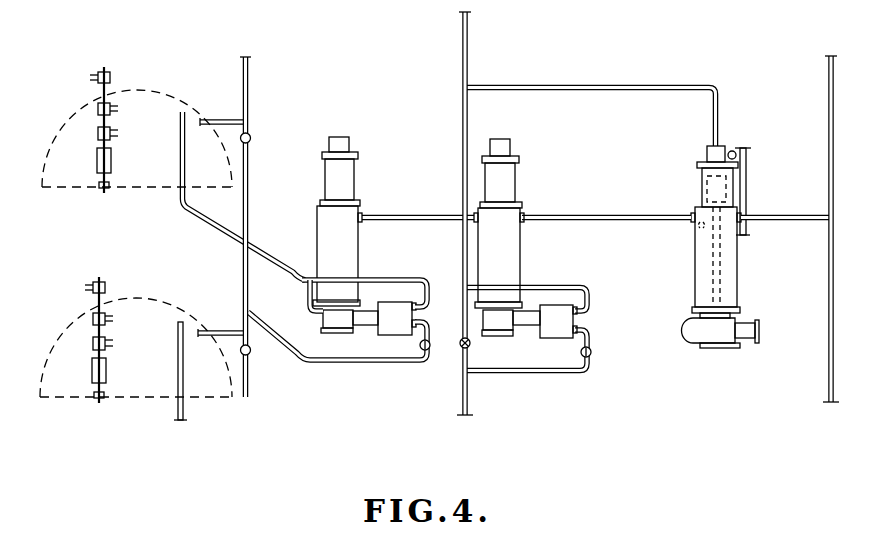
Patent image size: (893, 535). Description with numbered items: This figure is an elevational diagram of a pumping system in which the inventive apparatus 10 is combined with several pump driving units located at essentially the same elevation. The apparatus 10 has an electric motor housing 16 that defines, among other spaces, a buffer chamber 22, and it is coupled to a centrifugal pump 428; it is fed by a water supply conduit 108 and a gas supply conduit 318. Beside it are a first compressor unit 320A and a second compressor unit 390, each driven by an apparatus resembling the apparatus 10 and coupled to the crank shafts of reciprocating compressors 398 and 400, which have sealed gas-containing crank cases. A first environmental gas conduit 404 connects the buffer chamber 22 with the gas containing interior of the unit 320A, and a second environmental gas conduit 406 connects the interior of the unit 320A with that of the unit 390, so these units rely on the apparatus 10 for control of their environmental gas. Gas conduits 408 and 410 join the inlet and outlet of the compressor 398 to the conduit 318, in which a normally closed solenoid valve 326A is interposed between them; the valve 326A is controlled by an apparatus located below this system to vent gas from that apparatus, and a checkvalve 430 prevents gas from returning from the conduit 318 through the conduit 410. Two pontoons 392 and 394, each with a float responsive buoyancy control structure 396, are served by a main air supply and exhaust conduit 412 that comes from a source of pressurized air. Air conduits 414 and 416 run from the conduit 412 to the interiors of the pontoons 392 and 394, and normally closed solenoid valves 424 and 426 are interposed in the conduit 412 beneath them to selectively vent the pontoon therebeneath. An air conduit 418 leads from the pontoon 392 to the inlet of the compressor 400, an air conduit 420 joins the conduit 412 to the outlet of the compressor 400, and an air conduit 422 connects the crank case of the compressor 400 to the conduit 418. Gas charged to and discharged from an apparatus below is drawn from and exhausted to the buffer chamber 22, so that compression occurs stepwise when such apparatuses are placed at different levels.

The apparatus 10 is at (733, 139).
The electric motor housing 16 is at (702, 184).
The buffer chamber 22 is at (737, 273).
The water supply conduit 108 is at (829, 136).
The gas supply conduit 318 is at (470, 58).
The first compressor unit 320A is at (517, 185).
The normally closed solenoid valve 326A is at (470, 346).
The second compressor unit 390 is at (360, 184).
The pontoon 392 is at (70, 118).
The pontoon 394 is at (78, 399).
The float responsive buoyancy control structure 396 is at (112, 157).
The compressor 398 is at (577, 323).
The compressor 400 is at (400, 338).
The first environmental gas conduit 404 is at (578, 216).
The second environmental gas conduit 406 is at (435, 224).
The gas conduit 408 is at (551, 286).
The gas conduit 410 is at (494, 375).
The main air supply and exhaust conduit 412 is at (250, 90).
The air conduit 414 is at (232, 120).
The air conduit 416 is at (226, 330).
The air conduit 418 is at (268, 260).
The air conduit 420 is at (312, 368).
The air conduit 422 is at (307, 303).
The normally closed solenoid valve 424 is at (251, 139).
The normally closed solenoid valve 426 is at (250, 353).
The centrifugal pump 428 is at (723, 343).
The checkvalve 430 is at (592, 354).